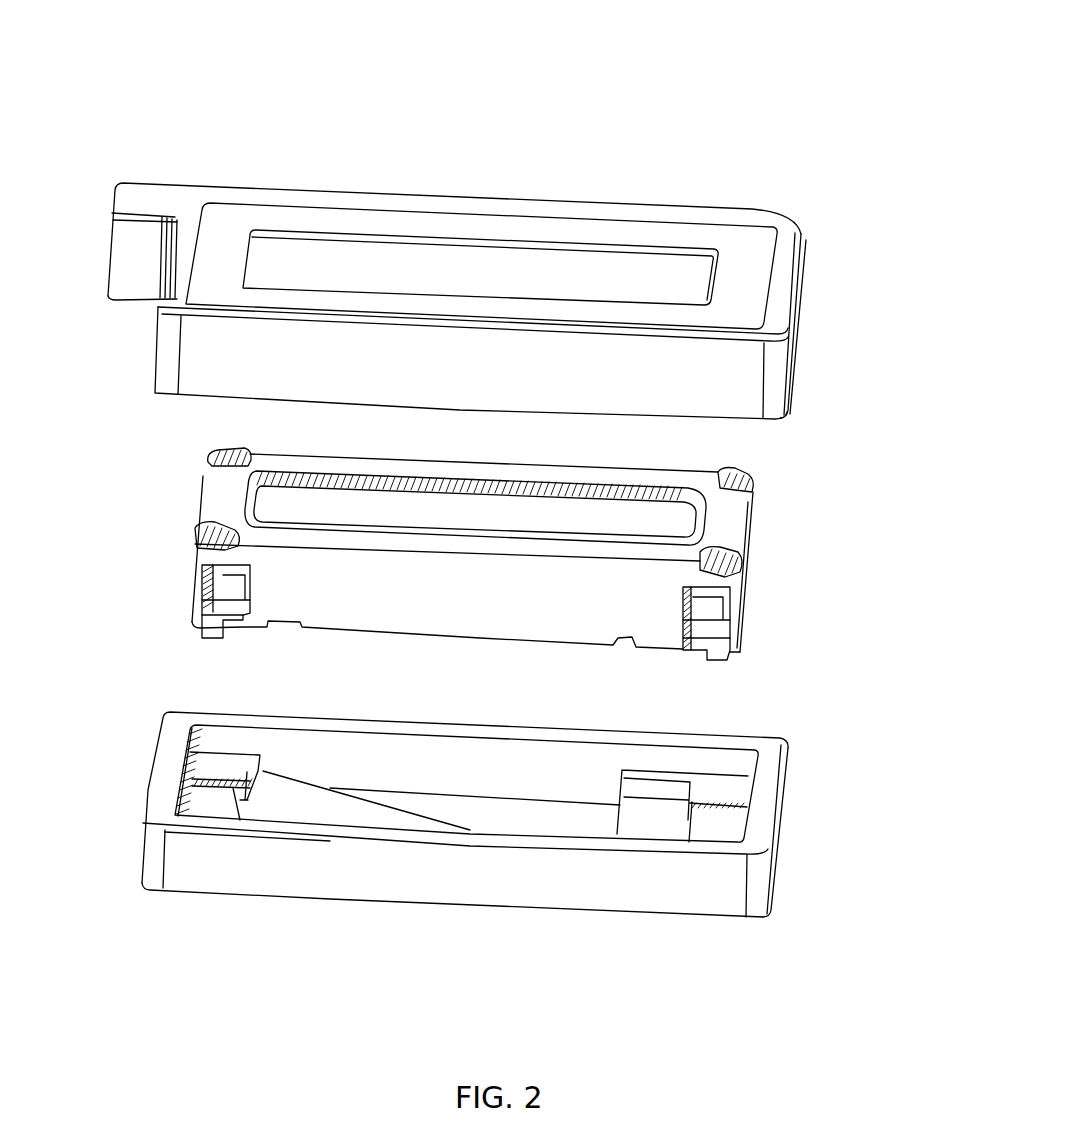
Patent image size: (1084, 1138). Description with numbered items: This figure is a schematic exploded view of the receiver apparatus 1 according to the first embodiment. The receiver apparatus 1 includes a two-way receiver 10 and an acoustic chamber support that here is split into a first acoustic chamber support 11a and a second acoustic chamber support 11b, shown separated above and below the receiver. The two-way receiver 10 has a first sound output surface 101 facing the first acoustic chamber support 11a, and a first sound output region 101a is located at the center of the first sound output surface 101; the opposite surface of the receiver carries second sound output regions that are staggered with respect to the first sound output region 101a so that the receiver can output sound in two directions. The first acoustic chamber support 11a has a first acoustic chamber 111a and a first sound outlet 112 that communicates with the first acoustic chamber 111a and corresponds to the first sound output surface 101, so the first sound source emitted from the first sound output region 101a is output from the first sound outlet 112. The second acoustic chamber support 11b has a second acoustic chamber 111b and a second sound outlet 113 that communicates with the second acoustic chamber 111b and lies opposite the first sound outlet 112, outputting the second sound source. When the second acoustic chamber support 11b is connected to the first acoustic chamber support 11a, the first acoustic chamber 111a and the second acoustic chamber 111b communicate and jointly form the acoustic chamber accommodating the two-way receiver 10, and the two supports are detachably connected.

The receiver apparatus 1 is at (752, 124).
The two-way receiver 10 is at (805, 550).
The first sound output surface 101 is at (727, 517).
The first sound output region 101a is at (262, 490).
The first acoustic chamber support 11a is at (802, 287).
The first acoustic chamber 111a is at (364, 258).
The first sound outlet 112 is at (560, 243).
The second acoustic chamber support 11b is at (783, 815).
The second acoustic chamber 111b is at (273, 792).
The second sound outlet 113 is at (413, 813).